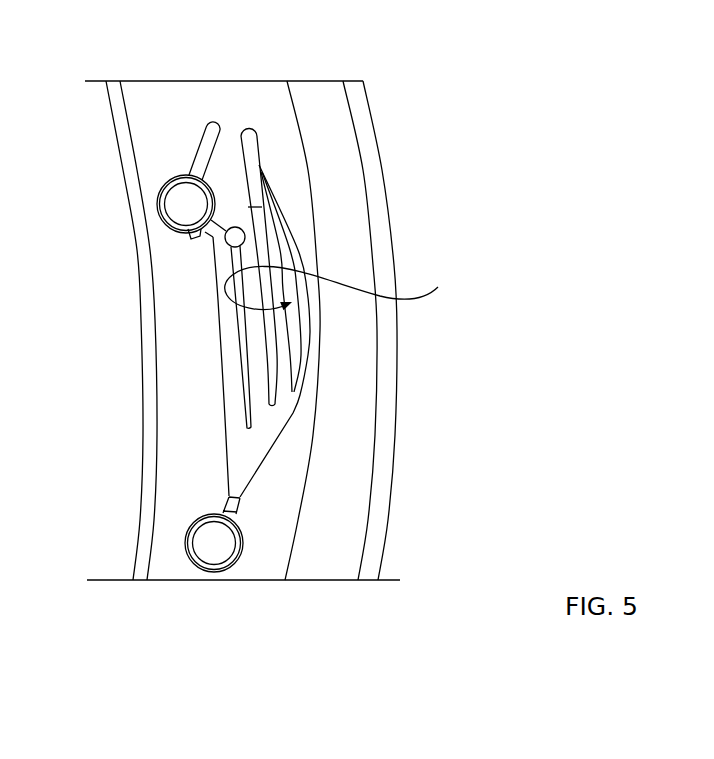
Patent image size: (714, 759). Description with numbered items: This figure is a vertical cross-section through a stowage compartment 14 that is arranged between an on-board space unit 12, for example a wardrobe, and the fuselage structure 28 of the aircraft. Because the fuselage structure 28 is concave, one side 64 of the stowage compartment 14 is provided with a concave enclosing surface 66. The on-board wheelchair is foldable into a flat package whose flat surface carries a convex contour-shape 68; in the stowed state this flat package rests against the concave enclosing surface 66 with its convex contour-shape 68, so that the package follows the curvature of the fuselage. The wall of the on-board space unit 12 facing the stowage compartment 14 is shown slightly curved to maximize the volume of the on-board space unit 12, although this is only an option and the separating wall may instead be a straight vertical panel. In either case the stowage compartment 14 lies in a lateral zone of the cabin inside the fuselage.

The on-board space unit 12 is at (85, 551).
The stowage compartment 14 is at (167, 114).
The fuselage structure 28 is at (363, 167).
The side of the stowage compartment 64 is at (334, 390).
The concave enclosing surface 66 is at (328, 361).
The convex contour-shape 68 is at (347, 285).